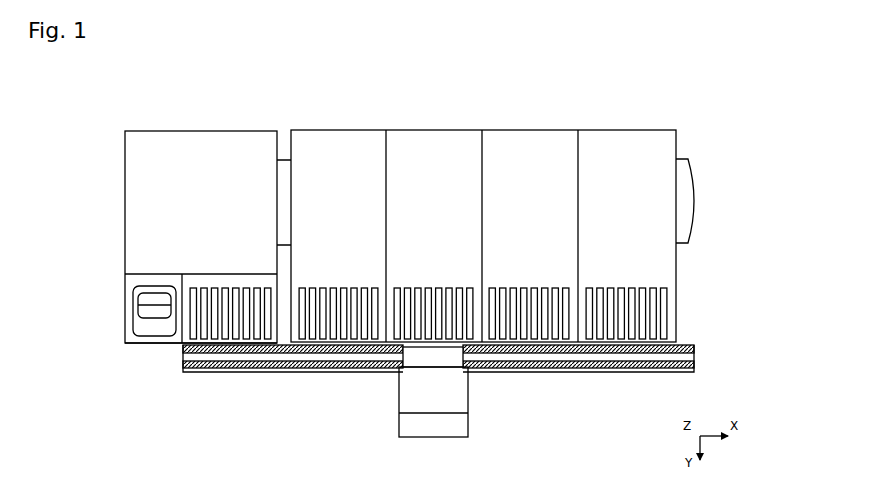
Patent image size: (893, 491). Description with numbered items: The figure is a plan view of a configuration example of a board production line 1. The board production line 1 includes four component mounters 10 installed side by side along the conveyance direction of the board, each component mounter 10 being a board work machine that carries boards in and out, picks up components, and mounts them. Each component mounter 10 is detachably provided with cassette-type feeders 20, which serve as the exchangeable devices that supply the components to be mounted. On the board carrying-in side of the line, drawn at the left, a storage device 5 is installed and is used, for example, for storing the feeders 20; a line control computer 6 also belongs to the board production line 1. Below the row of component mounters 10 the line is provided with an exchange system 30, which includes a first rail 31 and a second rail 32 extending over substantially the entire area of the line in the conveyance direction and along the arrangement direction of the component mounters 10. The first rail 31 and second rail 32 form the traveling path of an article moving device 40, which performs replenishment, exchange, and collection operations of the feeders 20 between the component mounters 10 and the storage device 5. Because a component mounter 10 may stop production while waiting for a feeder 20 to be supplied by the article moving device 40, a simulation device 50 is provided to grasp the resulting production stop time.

The board production line 1 is at (149, 110).
The storage device 5 is at (192, 270).
The line control computer 6 is at (130, 325).
The component mounter 10 is at (333, 140).
The feeder 20 is at (650, 387).
The exchange system 30 is at (368, 378).
The first rail 31 is at (545, 353).
The second rail 32 is at (590, 362).
The article moving device 40 is at (393, 400).
The simulation device 50 is at (140, 353).